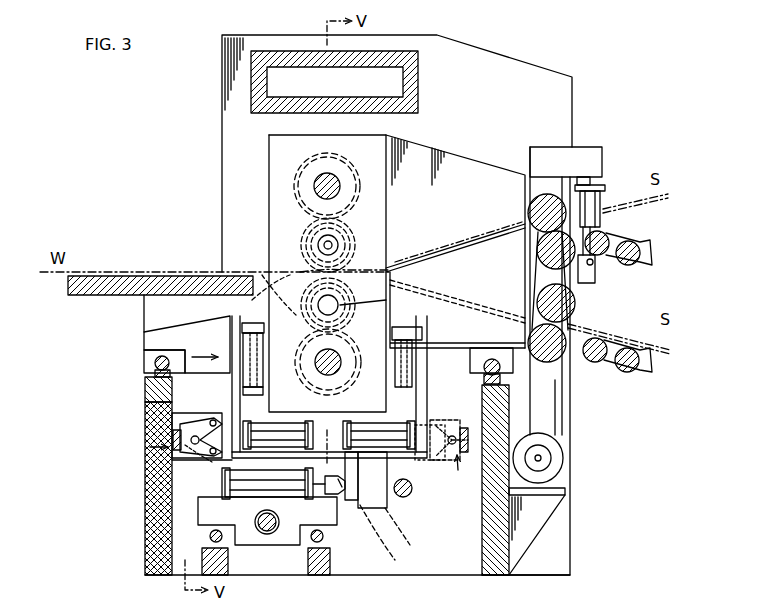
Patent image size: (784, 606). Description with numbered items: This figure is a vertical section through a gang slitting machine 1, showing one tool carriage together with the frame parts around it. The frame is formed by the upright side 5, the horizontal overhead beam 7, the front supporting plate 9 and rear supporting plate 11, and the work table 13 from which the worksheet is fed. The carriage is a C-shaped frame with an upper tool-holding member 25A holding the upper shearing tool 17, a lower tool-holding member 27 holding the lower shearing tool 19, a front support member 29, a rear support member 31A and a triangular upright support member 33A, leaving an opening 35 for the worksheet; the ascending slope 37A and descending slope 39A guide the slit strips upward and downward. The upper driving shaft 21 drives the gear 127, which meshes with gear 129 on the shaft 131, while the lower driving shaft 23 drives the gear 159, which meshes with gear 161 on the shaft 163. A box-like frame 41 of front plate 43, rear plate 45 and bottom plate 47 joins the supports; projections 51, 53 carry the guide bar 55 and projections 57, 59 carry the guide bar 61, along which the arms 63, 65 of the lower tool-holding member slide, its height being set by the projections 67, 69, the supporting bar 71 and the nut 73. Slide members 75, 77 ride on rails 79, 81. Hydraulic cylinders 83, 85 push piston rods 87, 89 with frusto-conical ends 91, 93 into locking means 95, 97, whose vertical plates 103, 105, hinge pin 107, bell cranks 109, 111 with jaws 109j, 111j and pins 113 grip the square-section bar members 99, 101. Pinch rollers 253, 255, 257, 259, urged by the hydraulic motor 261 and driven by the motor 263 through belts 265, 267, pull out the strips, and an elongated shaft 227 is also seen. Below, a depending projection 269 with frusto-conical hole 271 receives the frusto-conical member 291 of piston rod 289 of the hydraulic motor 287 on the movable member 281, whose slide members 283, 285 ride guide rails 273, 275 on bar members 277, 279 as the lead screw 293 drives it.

The gang slitting machine 1 is at (124, 131).
The upright side 5 is at (478, 58).
The horizontal overhead beam 7 is at (418, 77).
The front supporting plate 9 is at (145, 535).
The rear supporting plate 11 is at (484, 562).
The work table 13 is at (82, 300).
The upper shearing tool 17 is at (305, 235).
The lower shearing tool 19 is at (375, 262).
The upper driving shaft 21 is at (320, 178).
The lower driving shaft 23 is at (338, 375).
The upper tool-holding member 25A is at (268, 150).
The lower tool-holding member 27 is at (235, 270).
The front support member 29 is at (150, 340).
The rear support member 31A is at (503, 336).
The upright support member 33A is at (498, 275).
The opening 35 is at (250, 272).
The ascending slope 37A is at (460, 258).
The descending slope 39A is at (500, 300).
The box-like frame 41 is at (150, 330).
The front plate 43 is at (225, 340).
The rear plate 45 is at (440, 375).
The bottom plate 47 is at (366, 480).
The horizontal projection 51 is at (205, 285).
The horizontal projection 53 is at (243, 393).
The guide bar 55 is at (240, 332).
The horizontal projection 57 is at (428, 320).
The horizontal projection 59 is at (470, 362).
The guide bar 61 is at (412, 338).
The horizontal arm 63 is at (243, 372).
The horizontal arm 65 is at (412, 360).
The horizontal projection 67 is at (314, 430).
The horizontal projection 69 is at (245, 290).
The supporting bar 71 is at (318, 300).
The nut 73 is at (245, 278).
The slide member 75 is at (145, 355).
The slide member 77 is at (555, 380).
The rail 79 is at (155, 375).
The rail 81 is at (500, 384).
The hydraulic cylinder 83 is at (235, 465).
The hydraulic cylinder 85 is at (388, 430).
The piston rod 87 is at (255, 420).
The piston rod 89 is at (432, 462).
The frusto-conical end 91 is at (145, 520).
The frusto-conical end 93 is at (436, 422).
The locking means 95 is at (150, 447).
The locking means 97 is at (458, 470).
The square-section bar member 99 is at (172, 440).
The square-section bar member 101 is at (541, 456).
The vertical plate 103 is at (146, 390).
The vertical plate 105 is at (190, 418).
The hinge pin 107 is at (190, 450).
The bell crank means 109 is at (180, 428).
The crooked jaw portion 109j is at (180, 433).
The bell crank means 111 is at (198, 458).
The crooked jaw portion 111j is at (185, 445).
The horizontal pin 113 is at (448, 508).
The gear 127 is at (380, 134).
The gear 129 is at (355, 240).
The shaft 131 is at (340, 245).
The gear 159 is at (379, 301).
The gear 161 is at (300, 260).
The shaft 163 is at (432, 260).
The elongated shaft 227 is at (403, 497).
The upper pinch roller 253 is at (547, 200).
The pinch roller 255 is at (605, 232).
The pinch roller 257 is at (570, 330).
The pinch roller 259 is at (562, 340).
The hydraulic motor 261 is at (592, 207).
The motor 263 is at (548, 466).
The belt 265 is at (550, 452).
The belt 267 is at (595, 290).
The depending projection 269 is at (407, 530).
The frusto-conical hole 271 is at (394, 540).
The guide rail 273 is at (210, 537).
The guide rail 275 is at (322, 545).
The square-sectioned bar member 277 is at (205, 570).
The square-sectioned bar member 279 is at (318, 560).
The movable member 281 is at (276, 547).
The slide member 283 is at (205, 550).
The slide member 285 is at (340, 537).
The hydraulic motor 287 is at (252, 487).
The piston rod 289 is at (325, 485).
The frusto-conical member 291 is at (338, 490).
The lead screw 293 is at (264, 535).